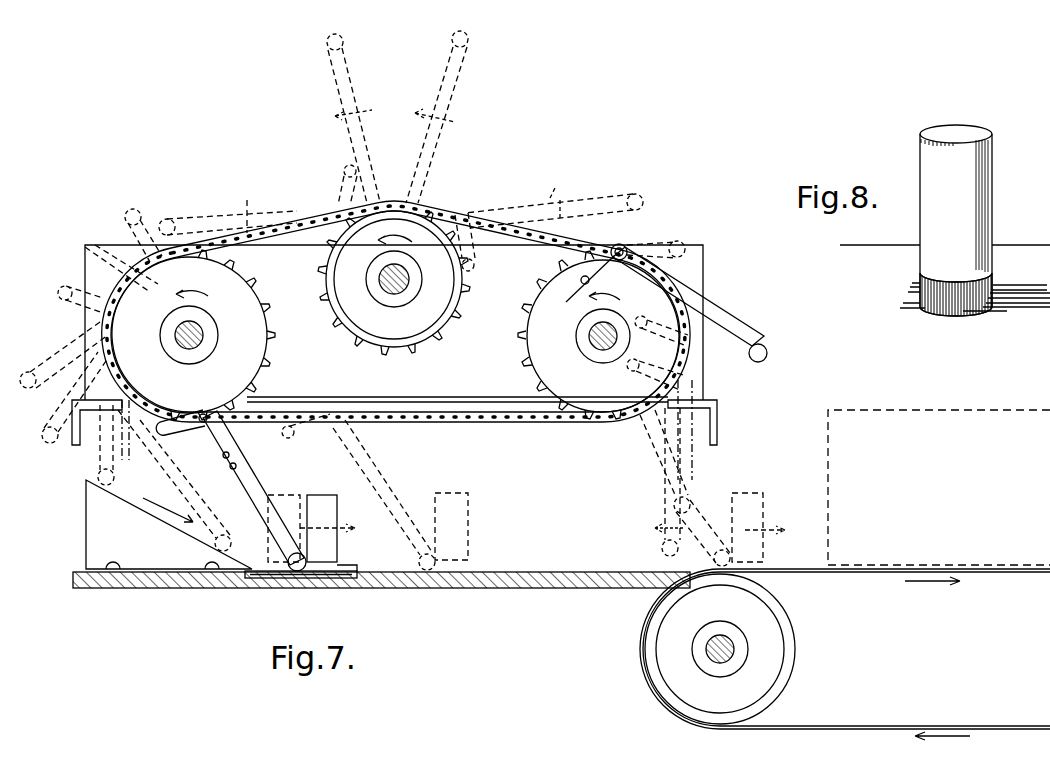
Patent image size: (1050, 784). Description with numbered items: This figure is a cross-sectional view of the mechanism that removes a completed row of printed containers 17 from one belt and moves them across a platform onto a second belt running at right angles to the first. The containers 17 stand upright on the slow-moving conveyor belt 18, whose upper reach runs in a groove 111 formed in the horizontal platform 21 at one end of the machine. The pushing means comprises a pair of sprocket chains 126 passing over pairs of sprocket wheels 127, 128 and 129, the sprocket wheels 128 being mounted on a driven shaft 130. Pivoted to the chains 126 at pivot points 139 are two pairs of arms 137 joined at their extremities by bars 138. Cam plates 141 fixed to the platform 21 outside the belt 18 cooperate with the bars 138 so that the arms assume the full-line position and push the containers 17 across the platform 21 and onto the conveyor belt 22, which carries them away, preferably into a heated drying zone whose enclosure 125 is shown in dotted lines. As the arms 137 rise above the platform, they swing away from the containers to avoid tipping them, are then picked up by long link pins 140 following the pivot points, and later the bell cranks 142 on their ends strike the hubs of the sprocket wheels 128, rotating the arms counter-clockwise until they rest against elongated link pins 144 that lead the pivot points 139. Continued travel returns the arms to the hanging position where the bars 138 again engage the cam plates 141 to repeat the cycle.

In FIG. 7, the containers 17 is at (318, 503).
In FIG. 8, the containers 17 is at (982, 194).
In FIG. 7, the conveyor belt 18 is at (352, 570).
In FIG. 7, the platform 21 is at (515, 571).
In FIG. 7, the second conveyor belt 22 is at (820, 575).
In FIG. 7, the groove 111 is at (340, 580).
In FIG. 7, the enclosure for the heated zone 125 is at (918, 426).
In FIG. 7, the sprocket chains 126 is at (520, 424).
In FIG. 7, the sprocket wheels 127 is at (255, 350).
In FIG. 7, the sprocket wheels 128 is at (430, 315).
In FIG. 7, the sprocket wheels 129 is at (542, 300).
In FIG. 7, the shaft 130 is at (392, 292).
In FIG. 7, the arms 137 is at (722, 326).
In FIG. 7, the bars 138 is at (98, 476).
In FIG. 7, the pivot points 139 is at (624, 248).
In FIG. 7, the long link pin 140 is at (124, 394).
In FIG. 7, the cam plates 141 is at (106, 522).
In FIG. 7, the bell cranks 142 is at (600, 272).
In FIG. 7, the elongated link pins 144 is at (268, 228).